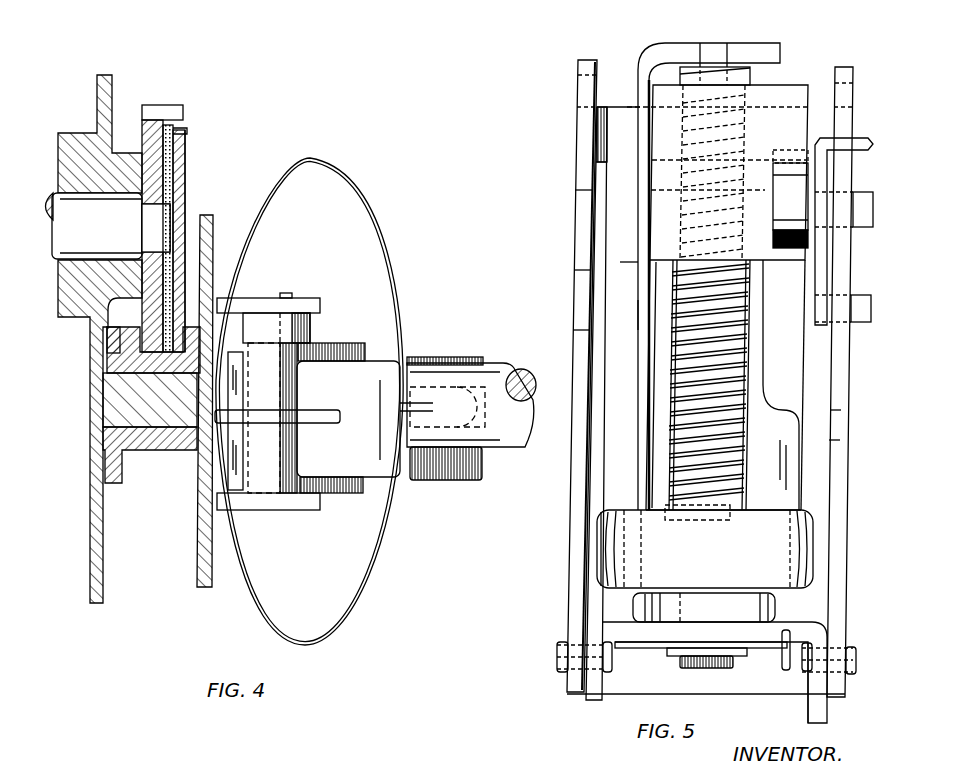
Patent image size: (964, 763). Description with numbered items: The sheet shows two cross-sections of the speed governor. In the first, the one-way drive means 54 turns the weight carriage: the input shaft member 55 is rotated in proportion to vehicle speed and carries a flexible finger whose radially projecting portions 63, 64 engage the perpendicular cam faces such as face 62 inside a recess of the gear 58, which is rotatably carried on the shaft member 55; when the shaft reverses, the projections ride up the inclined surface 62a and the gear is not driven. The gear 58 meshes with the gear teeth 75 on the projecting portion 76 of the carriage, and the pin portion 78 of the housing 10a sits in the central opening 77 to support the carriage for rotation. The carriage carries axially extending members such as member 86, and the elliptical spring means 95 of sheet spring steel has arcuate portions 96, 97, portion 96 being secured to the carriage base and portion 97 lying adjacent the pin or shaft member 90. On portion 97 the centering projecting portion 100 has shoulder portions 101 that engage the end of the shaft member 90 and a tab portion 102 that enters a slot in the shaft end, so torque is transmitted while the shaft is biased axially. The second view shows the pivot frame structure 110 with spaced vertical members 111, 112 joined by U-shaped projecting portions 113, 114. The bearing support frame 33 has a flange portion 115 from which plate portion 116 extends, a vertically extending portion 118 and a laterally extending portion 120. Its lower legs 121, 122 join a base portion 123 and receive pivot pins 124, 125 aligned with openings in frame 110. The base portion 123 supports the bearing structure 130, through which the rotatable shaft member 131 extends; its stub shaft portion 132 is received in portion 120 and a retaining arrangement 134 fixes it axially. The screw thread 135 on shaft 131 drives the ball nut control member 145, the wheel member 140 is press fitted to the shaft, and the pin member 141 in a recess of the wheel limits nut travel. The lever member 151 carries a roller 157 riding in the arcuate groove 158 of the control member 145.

In FIG. 4, the housing 10a is at (95, 527).
In FIG. 4, the input shaft member 55 is at (110, 240).
In FIG. 4, the gear 58 is at (175, 105).
In FIG. 4, the axially extending face 62 is at (170, 130).
In FIG. 4, the inclined upper surface 62a is at (177, 150).
In FIG. 4, the radially projecting portion 63 is at (180, 165).
In FIG. 4, the one-way drive means 54 is at (199, 183).
In FIG. 4, the radially projecting portion 64 is at (204, 283).
In FIG. 4, the gear teeth 75 is at (123, 340).
In FIG. 4, the projecting portion 76 is at (120, 365).
In FIG. 4, the central opening 77 is at (115, 395).
In FIG. 4, the projecting portion or pin portion 78 is at (115, 430).
In FIG. 4, the spring means 95 is at (371, 193).
In FIG. 4, the arcuate portion 97 is at (397, 285).
In FIG. 4, the arcuate portion 96 is at (222, 287).
In FIG. 4, the axially extending member 86 is at (265, 510).
In FIG. 4, the shoulder portions 101 is at (412, 488).
In FIG. 4, the pin or shaft member 90 is at (531, 452).
In FIG. 4, the projecting tab portion 102 is at (490, 478).
In FIG. 4, the projecting portion 100 is at (438, 388).
In FIG. 5, the elongated vertically extending member 111 is at (576, 590).
In FIG. 5, the pivot frame structure 110 is at (568, 512).
In FIG. 5, the vertically extending portion 118 is at (637, 123).
In FIG. 5, the U-shaped projecting portion 114 is at (602, 157).
In FIG. 5, the plate portion 116 is at (637, 260).
In FIG. 5, the bearing support frame 33 is at (636, 315).
In FIG. 5, the laterally extending portion 120 is at (680, 52).
In FIG. 5, the projecting stub shaft portion 132 is at (723, 53).
In FIG. 5, the control member 145 is at (775, 107).
In FIG. 5, the roller 157 is at (787, 197).
In FIG. 5, the arcuate groove 158 is at (775, 250).
In FIG. 5, the first lever member 151 is at (872, 148).
In FIG. 5, the elongated vertically extending member 112 is at (835, 598).
In FIG. 5, the screw thread 135 is at (733, 340).
In FIG. 5, the forward face or flange portion 115 is at (757, 413).
In FIG. 5, the pin member 141 is at (676, 538).
In FIG. 5, the wheel member 140 is at (735, 540).
In FIG. 5, the bearing structure 130 is at (640, 605).
In FIG. 5, the U-shaped projecting portion 113 is at (625, 690).
In FIG. 5, the leg 121 is at (590, 678).
In FIG. 5, the leg 122 is at (815, 708).
In FIG. 5, the pivot pin 124 is at (558, 655).
In FIG. 5, the pivot pin 125 is at (850, 663).
In FIG. 5, the shaft or rotatable member 131 is at (672, 656).
In FIG. 5, the retaining arrangement 134 is at (737, 666).
In FIG. 5, the base portion 123 is at (787, 637).